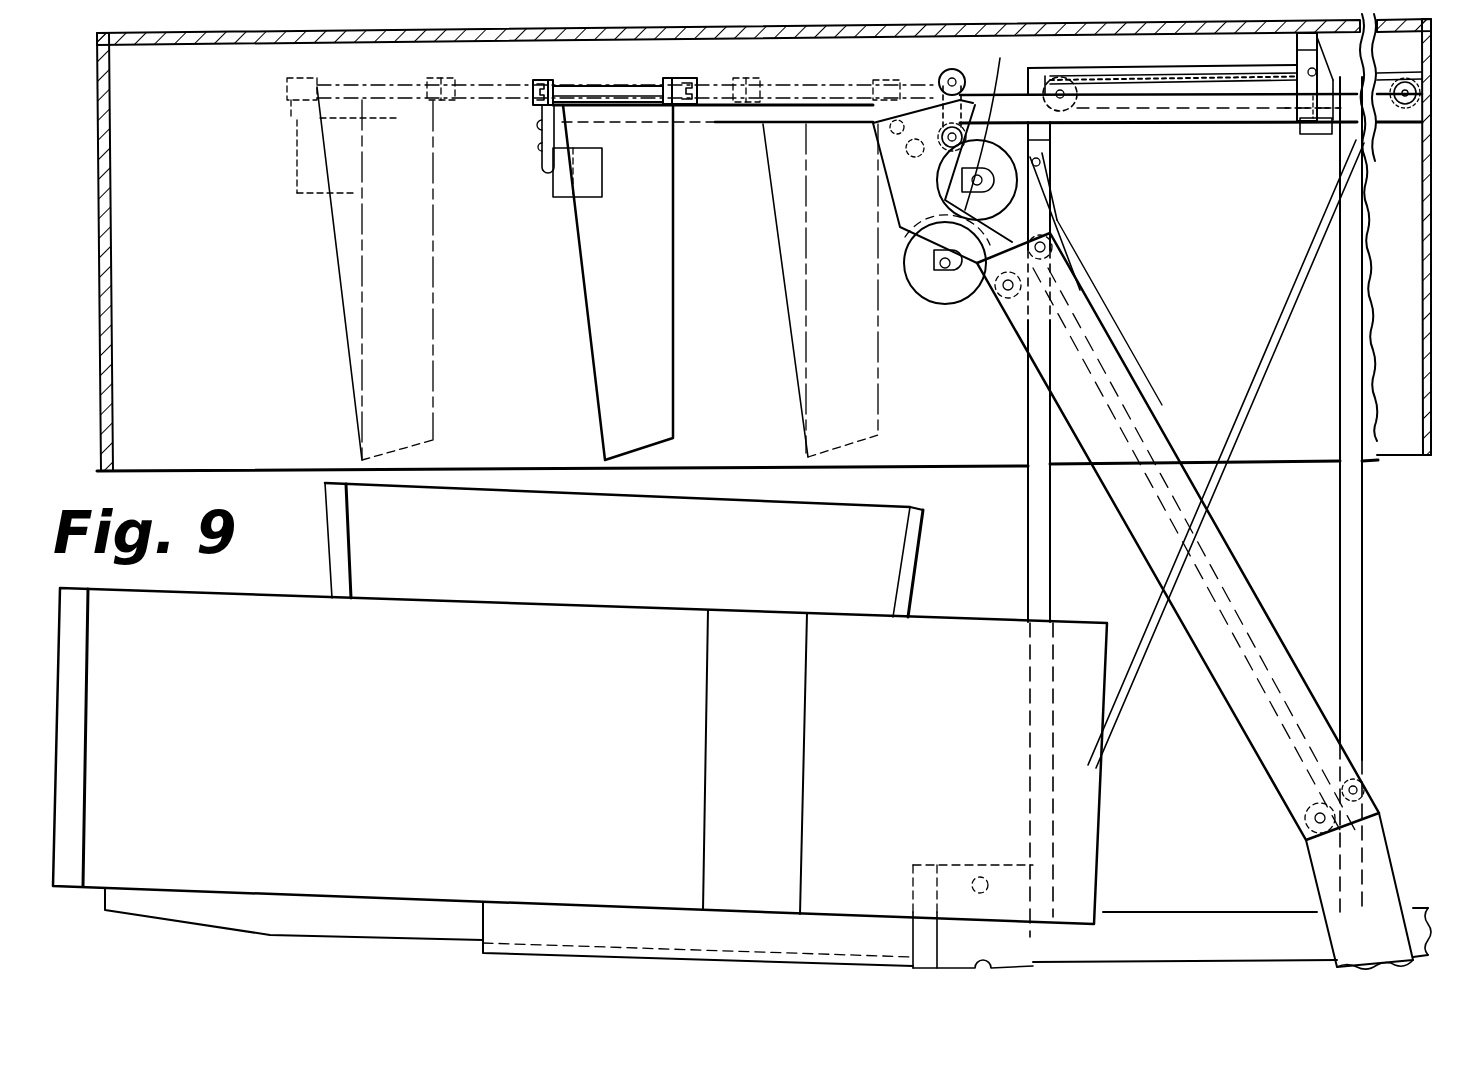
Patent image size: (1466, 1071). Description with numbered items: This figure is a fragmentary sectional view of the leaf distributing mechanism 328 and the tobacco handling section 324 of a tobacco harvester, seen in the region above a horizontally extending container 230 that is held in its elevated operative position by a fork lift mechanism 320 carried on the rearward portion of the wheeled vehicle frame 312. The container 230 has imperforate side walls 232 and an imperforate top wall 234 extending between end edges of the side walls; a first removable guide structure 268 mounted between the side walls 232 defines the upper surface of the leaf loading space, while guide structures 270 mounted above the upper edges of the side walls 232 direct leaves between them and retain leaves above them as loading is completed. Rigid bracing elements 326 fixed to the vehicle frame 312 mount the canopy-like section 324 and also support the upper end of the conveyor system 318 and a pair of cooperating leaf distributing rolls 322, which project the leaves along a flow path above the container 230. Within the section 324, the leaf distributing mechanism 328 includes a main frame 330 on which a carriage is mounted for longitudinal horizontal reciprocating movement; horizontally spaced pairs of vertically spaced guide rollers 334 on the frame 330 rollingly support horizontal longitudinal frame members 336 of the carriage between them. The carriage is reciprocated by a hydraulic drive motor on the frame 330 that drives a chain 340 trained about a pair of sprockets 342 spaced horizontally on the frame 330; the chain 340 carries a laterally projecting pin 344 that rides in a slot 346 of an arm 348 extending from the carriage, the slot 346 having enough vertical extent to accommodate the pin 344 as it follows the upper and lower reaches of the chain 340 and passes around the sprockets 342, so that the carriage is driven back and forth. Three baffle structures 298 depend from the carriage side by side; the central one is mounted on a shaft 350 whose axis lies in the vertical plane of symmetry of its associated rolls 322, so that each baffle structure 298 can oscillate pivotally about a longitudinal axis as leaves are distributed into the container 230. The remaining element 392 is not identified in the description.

The tobacco handling section 324 is at (98, 128).
The leaf distributing mechanism 328 is at (520, 77).
The track carriers 392 is at (557, 83).
The shaft 350 is at (640, 92).
The horizontal longitudinal frame members 336 is at (703, 110).
The main frame 330 is at (1122, 118).
The baffle structure 298 is at (424, 302).
The guide rollers 334 is at (985, 64).
The sprockets 342 is at (1405, 125).
The chain 340 is at (1128, 126).
The slot 346 is at (1295, 46).
The laterally projecting pin 344 is at (1320, 130).
The arm 348 is at (1399, 74).
The leaf distributing rolls 322 is at (1013, 188).
The conveyor system 318 is at (1144, 391).
The rigid bracing elements 326 is at (1163, 613).
The guide structures 270 is at (652, 523).
The first removable guide structure 268 is at (327, 570).
The container 230 is at (983, 620).
The imperforate top wall 234 is at (55, 668).
The imperforate side walls 232 is at (1067, 790).
The wheeled vehicle frame 312 is at (1232, 906).
The fork lift mechanism 320 is at (299, 938).